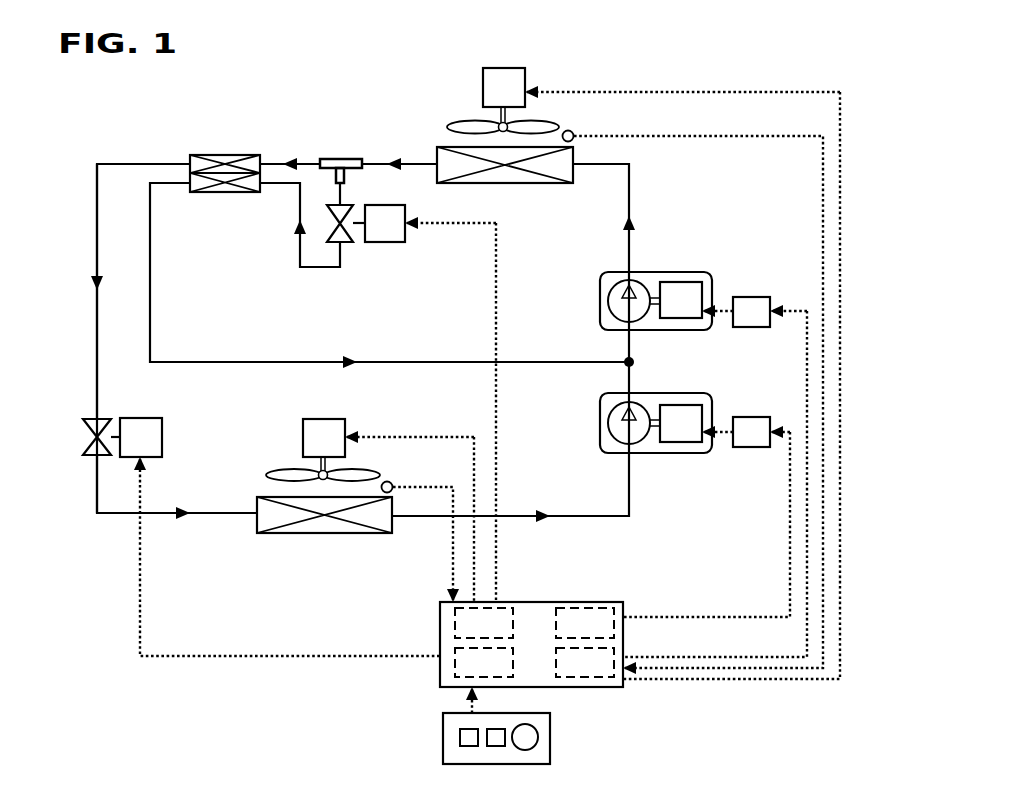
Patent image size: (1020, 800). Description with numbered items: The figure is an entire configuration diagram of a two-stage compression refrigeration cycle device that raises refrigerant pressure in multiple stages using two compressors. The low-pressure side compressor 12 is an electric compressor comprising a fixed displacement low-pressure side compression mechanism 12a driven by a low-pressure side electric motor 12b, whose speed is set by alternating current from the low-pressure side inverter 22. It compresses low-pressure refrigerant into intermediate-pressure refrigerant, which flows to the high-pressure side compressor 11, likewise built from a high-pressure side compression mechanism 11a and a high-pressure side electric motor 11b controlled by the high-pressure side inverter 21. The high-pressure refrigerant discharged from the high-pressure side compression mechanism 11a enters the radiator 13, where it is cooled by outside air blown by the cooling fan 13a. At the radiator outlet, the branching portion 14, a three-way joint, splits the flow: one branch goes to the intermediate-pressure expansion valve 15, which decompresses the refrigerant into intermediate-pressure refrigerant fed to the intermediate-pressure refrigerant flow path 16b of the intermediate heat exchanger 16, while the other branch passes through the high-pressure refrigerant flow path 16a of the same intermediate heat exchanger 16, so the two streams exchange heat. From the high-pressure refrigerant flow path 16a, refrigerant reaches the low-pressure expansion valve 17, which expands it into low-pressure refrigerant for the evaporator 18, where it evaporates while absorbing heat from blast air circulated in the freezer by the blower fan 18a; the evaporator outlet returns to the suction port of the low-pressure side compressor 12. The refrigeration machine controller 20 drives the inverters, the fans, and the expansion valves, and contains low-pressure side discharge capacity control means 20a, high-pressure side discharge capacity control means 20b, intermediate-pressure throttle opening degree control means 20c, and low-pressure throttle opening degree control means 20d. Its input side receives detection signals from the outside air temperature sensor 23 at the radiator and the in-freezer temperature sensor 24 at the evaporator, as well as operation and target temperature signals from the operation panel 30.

The high-pressure side compressor 11 is at (621, 302).
The high-pressure side compression mechanism 11a is at (608, 298).
The high-pressure side electric motor 11b is at (682, 318).
The low-pressure side compressor 12 is at (621, 451).
The low-pressure side compression mechanism 12a is at (608, 420).
The low-pressure side electric motor 12b is at (682, 442).
The radiator 13 is at (437, 150).
The cooling fan 13a is at (483, 92).
The branching portion 14 is at (336, 159).
The intermediate-pressure expansion valve 15 is at (385, 243).
The intermediate heat exchanger 16 is at (192, 175).
The high-pressure refrigerant flow path 16a is at (236, 155).
The intermediate-pressure refrigerant flow path 16b is at (236, 192).
The low-pressure expansion valve 17 is at (142, 418).
The evaporator 18 is at (257, 500).
The blower fan 18a is at (303, 440).
The refrigeration machine controller 20 is at (506, 650).
The low-pressure side discharge capacity control means 20a is at (612, 610).
The high-pressure side discharge capacity control means 20b is at (612, 678).
The intermediate-pressure throttle opening degree control means 20c is at (455, 610).
The low-pressure throttle opening degree control means 20d is at (455, 674).
The high-pressure side inverter 21 is at (748, 297).
The low-pressure side inverter 22 is at (748, 417).
The outside air temperature sensor 23 is at (574, 134).
The in-freezer temperature sensor 24 is at (392, 486).
The operation panel 30 is at (443, 740).